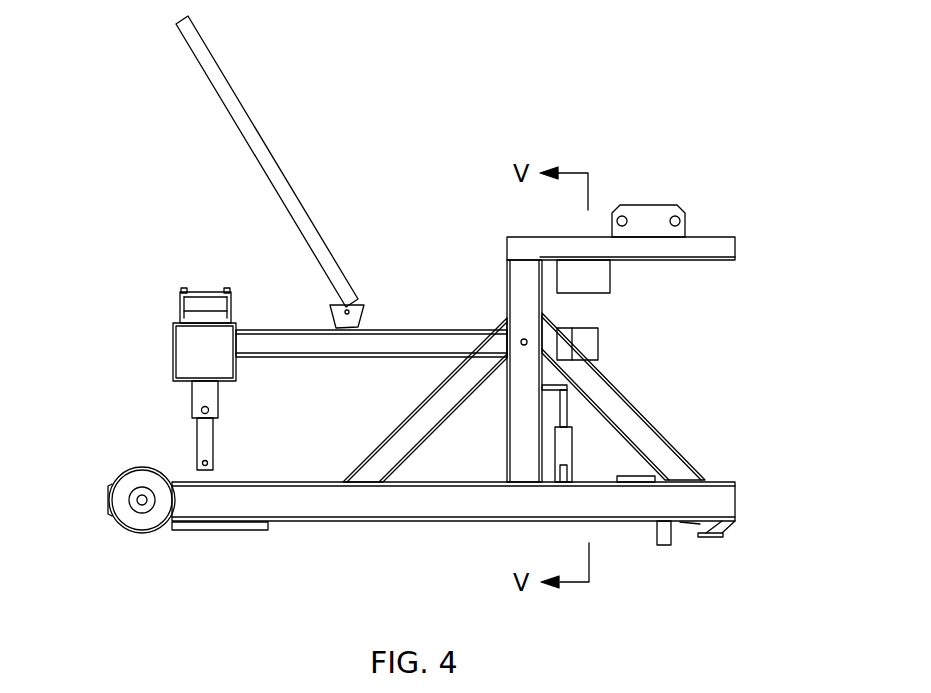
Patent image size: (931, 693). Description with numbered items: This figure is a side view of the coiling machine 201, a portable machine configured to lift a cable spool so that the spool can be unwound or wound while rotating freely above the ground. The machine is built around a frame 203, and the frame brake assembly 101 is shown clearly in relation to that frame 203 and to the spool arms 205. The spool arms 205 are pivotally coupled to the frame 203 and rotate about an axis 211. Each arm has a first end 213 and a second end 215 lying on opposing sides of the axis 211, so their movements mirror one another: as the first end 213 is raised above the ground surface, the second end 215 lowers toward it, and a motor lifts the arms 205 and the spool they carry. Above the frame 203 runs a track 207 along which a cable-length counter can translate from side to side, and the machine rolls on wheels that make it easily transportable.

The coiling machine 201 is at (746, 74).
The frame 203 is at (399, 513).
The spool arms 205 is at (382, 354).
The track 207 is at (686, 186).
The axis 211 is at (523, 338).
The first end 213 is at (148, 341).
The second end 215 is at (622, 345).
The frame brake assembly 101 is at (592, 446).